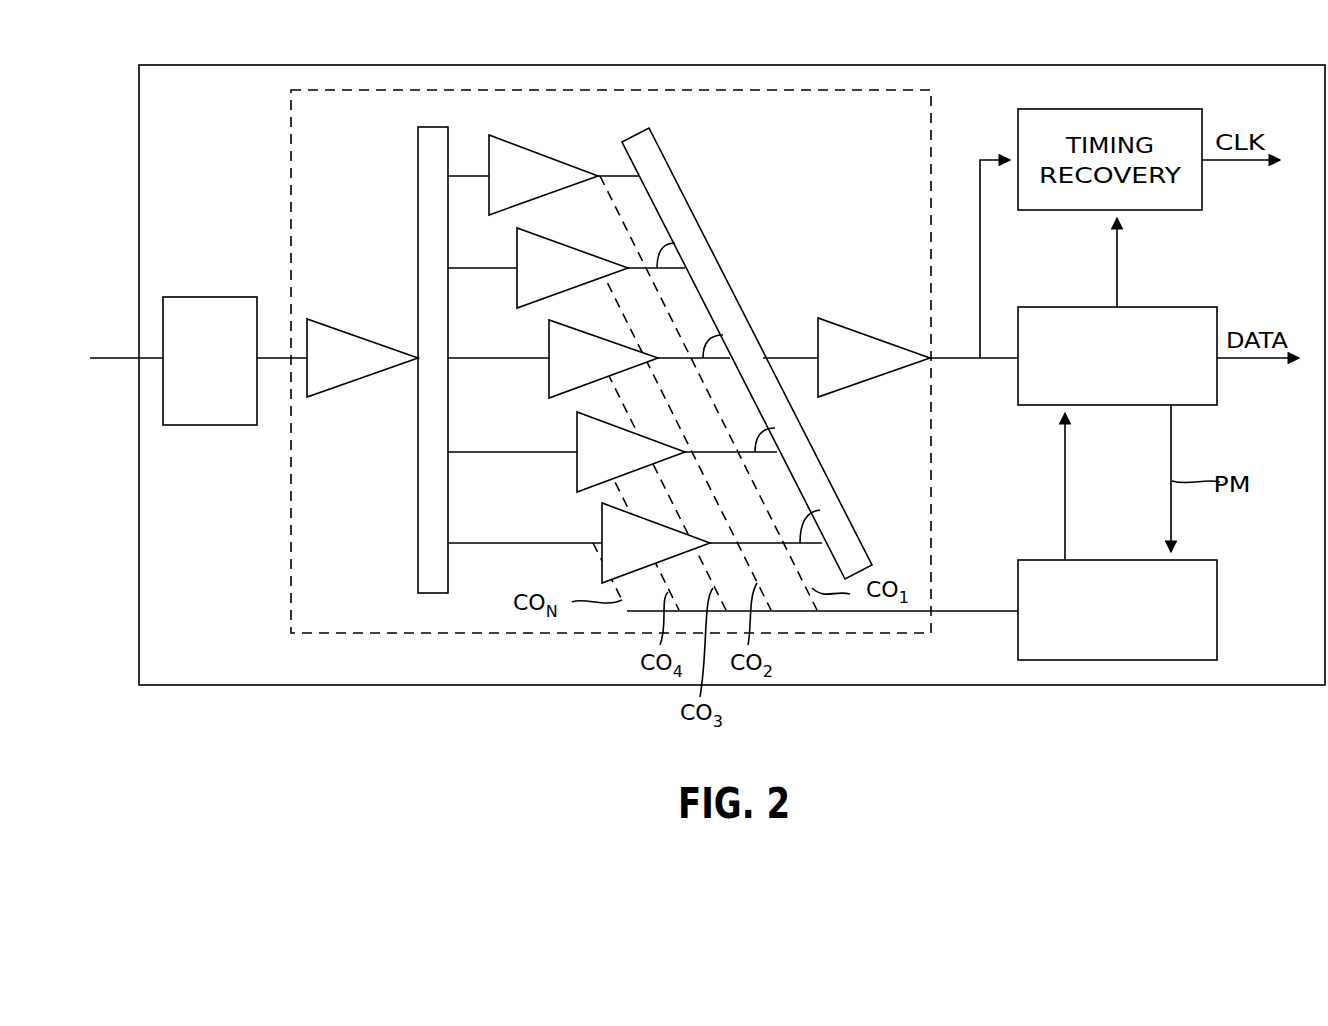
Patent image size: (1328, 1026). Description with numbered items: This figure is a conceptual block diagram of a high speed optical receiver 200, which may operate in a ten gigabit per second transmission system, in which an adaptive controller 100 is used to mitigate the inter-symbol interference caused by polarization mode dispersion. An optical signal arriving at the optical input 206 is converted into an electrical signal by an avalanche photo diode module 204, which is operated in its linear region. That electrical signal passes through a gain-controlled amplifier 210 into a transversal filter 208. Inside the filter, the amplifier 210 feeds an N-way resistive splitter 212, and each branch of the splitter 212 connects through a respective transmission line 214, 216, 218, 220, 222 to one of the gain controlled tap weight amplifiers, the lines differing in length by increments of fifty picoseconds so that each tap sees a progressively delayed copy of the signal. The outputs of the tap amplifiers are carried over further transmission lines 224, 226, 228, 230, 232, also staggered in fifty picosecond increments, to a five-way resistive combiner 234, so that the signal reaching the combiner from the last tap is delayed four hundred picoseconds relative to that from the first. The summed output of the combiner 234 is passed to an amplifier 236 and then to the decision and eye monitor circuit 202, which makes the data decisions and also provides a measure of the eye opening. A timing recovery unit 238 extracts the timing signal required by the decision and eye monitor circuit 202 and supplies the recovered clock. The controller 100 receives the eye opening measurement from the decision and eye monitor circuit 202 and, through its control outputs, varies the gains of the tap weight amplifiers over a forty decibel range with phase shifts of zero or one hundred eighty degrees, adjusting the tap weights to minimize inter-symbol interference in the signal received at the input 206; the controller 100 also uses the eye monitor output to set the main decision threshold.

The optical receiver 200 is at (672, 65).
The decision and eye monitor circuit 202 is at (1062, 307).
The avalanche photo diode module 204 is at (212, 297).
The optical input 206 is at (108, 358).
The transversal filter 208 is at (291, 161).
The gain-controlled amplifier 210 is at (350, 334).
The N-way resistive splitter 212 is at (418, 201).
The transmission line 214 is at (465, 176).
The transmission line 216 is at (488, 268).
The transmission line 218 is at (492, 358).
The transmission line 220 is at (505, 452).
The transmission line 222 is at (520, 543).
The transmission line 224 is at (617, 174).
The transmission line 226 is at (675, 243).
The transmission line 228 is at (723, 335).
The transmission line 230 is at (775, 428).
The transmission line 232 is at (820, 510).
The resistive combiner 234 is at (687, 203).
The amplifier 236 is at (862, 334).
The timing recovery unit 238 is at (1170, 210).
The adaptive controller 100 is at (1217, 609).